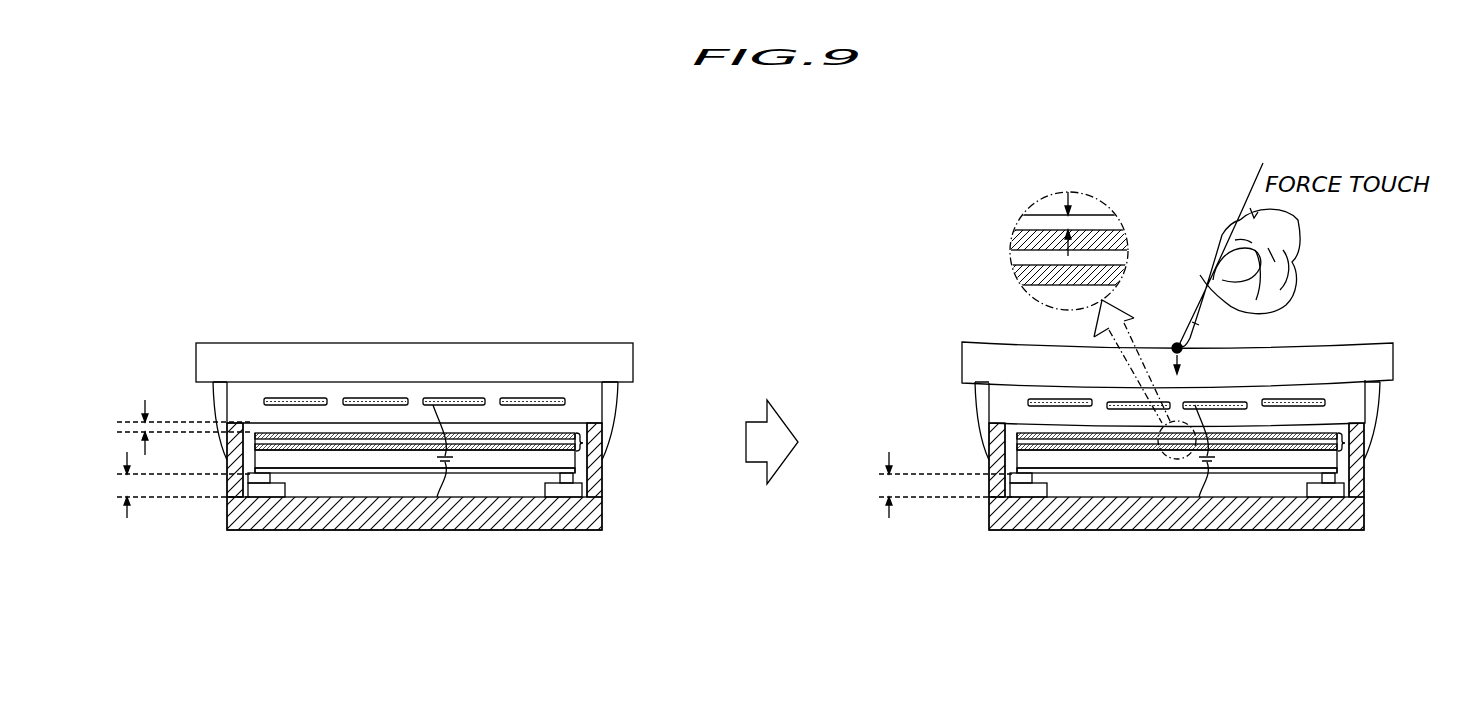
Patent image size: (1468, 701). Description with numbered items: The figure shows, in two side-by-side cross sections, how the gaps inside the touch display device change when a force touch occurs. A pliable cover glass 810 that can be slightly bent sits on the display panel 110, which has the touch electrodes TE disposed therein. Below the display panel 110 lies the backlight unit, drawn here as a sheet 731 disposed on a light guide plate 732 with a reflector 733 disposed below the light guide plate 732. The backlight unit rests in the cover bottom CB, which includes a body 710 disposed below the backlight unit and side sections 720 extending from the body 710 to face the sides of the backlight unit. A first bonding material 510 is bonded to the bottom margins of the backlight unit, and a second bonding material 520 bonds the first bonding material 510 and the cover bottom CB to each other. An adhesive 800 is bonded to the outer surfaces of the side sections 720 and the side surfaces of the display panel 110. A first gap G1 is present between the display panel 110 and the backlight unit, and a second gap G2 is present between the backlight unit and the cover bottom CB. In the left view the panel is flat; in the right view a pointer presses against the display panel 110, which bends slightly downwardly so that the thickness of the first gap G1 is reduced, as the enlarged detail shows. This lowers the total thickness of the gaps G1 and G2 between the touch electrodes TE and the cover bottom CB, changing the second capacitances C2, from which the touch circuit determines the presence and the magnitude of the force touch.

The cover glass 810 is at (633, 364).
The display panel 110 is at (233, 400).
The touch electrodes TE is at (565, 401).
The sheet 731 is at (583, 441).
The light guide plate 732 is at (590, 458).
The reflector 733 is at (588, 470).
The first bonding material 510 is at (576, 478).
The second bonding material 520 is at (583, 490).
The adhesive 800 is at (225, 444).
The side sections 720 is at (228, 483).
The body 710 is at (232, 518).
The cover bottom CB is at (133, 559).
The first gap G1 is at (1143, 243).
The second gap G2 is at (547, 485).
The second capacitances C2 is at (839, 451).